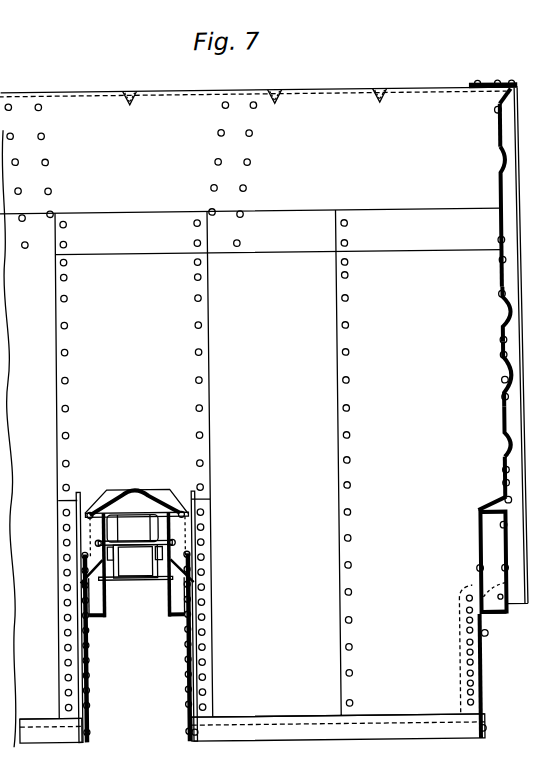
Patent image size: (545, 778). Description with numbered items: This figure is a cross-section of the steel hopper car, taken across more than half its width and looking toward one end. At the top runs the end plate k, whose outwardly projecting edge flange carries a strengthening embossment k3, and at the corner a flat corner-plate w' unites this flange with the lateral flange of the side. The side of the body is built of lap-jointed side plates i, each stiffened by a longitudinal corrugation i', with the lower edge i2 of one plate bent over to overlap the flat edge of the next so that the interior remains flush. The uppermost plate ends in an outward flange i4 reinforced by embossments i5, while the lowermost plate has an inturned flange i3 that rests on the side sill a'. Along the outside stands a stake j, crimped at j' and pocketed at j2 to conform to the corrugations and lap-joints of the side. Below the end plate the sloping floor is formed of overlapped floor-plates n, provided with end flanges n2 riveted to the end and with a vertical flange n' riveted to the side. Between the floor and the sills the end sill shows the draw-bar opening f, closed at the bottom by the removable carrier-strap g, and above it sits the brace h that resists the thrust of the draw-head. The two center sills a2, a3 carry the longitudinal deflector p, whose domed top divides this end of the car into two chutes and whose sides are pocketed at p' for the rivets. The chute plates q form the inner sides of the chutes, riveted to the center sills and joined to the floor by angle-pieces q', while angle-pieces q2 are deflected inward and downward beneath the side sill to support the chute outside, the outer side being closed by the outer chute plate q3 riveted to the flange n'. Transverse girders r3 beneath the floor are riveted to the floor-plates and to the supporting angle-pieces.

The end plate k is at (259, 141).
The embossment k3 is at (282, 91).
The corner-plate w' is at (490, 67).
The outward flange i4 is at (519, 87).
The embossment i5 is at (496, 113).
The side plate i is at (478, 125).
The longitudinal corrugation i' is at (480, 192).
The bent edge i2 is at (497, 237).
The stake j is at (489, 307).
The crimp j' is at (487, 364).
The pocket j2 is at (495, 400).
The vertical flange n' is at (486, 461).
The inturned flange i3 is at (490, 497).
The side sill a' is at (502, 612).
The outer chute plate q3 is at (479, 674).
The angle-piece q2 is at (454, 645).
The end flange n2 is at (250, 230).
The floor-plate n is at (243, 436).
The angle-piece q' is at (142, 617).
The chute plate q is at (136, 629).
The longitudinal deflector p is at (136, 488).
The pocket p' is at (138, 487).
The brace h is at (132, 529).
The carrier-strap g is at (133, 579).
The draw-bar opening f is at (135, 561).
The center sill a2 is at (92, 617).
The center sill a3 is at (162, 617).
The transverse girder r3 is at (59, 741).